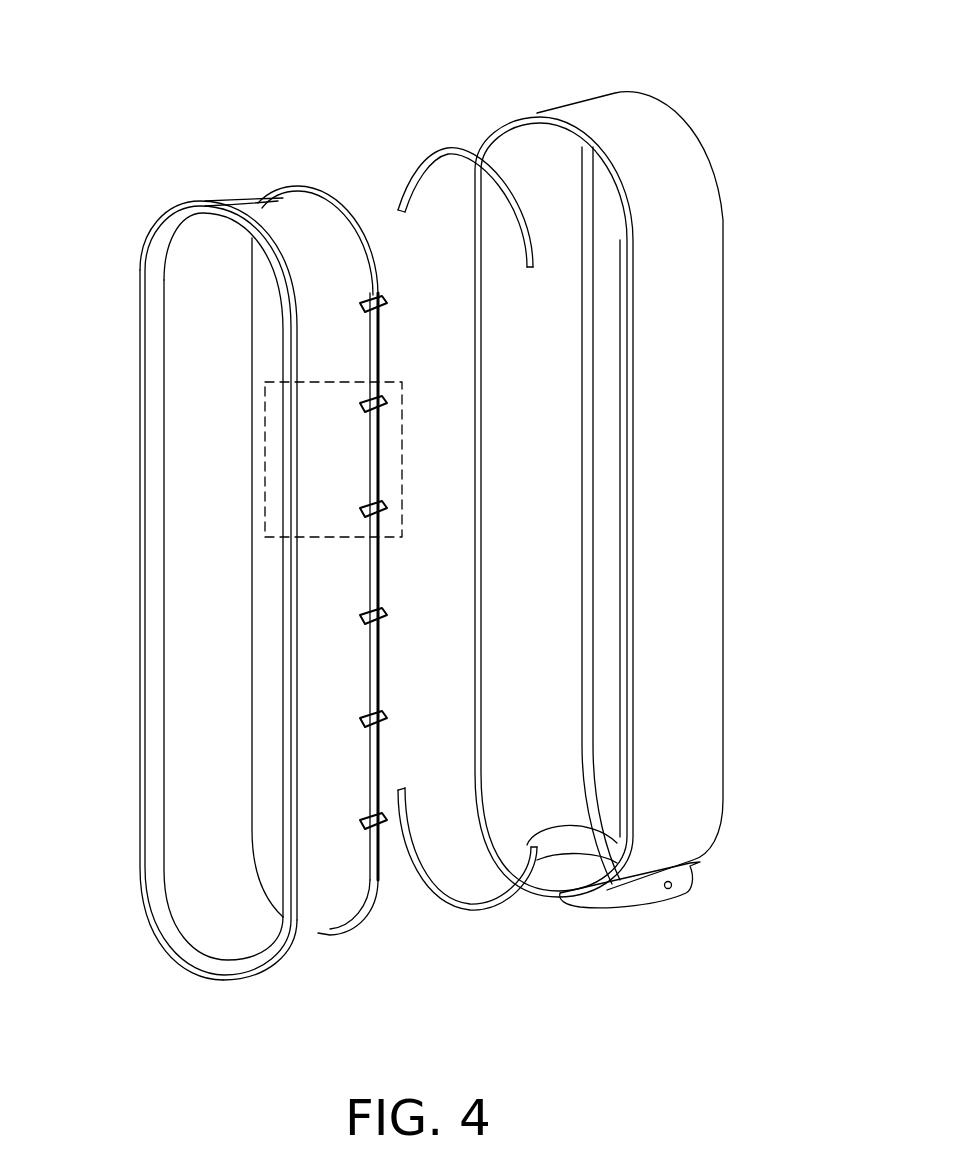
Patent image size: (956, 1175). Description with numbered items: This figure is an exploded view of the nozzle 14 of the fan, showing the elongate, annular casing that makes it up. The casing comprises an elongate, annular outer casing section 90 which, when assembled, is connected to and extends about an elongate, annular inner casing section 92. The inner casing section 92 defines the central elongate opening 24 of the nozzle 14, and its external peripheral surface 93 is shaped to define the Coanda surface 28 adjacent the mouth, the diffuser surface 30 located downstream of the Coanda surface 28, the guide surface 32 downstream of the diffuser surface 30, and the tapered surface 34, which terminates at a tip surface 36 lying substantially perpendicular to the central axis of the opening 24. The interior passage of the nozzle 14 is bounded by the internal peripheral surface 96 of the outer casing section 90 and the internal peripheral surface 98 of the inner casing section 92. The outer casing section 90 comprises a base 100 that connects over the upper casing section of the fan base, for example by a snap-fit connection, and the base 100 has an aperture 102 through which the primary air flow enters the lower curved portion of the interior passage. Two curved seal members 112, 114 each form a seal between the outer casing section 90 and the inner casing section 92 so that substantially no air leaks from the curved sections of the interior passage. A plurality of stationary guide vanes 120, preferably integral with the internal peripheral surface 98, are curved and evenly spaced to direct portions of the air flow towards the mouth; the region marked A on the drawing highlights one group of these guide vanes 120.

The nozzle 14 is at (490, 86).
The central elongate opening 24 is at (262, 583).
The Coanda surface 28 is at (252, 782).
The diffuser surface 30 is at (246, 950).
The guide surface 32 is at (190, 905).
The tapered surface 34 is at (155, 675).
The tip surface 36 is at (140, 878).
The outer casing section 90 is at (758, 502).
The inner casing section 92 is at (112, 491).
The external peripheral surface 93 is at (187, 351).
The internal peripheral surface 96 is at (500, 705).
The internal peripheral surface 98 is at (292, 214).
The base 100 is at (668, 890).
The aperture 102 is at (568, 875).
The curved seal member 112 is at (445, 147).
The curved seal member 114 is at (447, 905).
The stationary guide vanes 120 is at (382, 297).
The detail region A is at (265, 462).